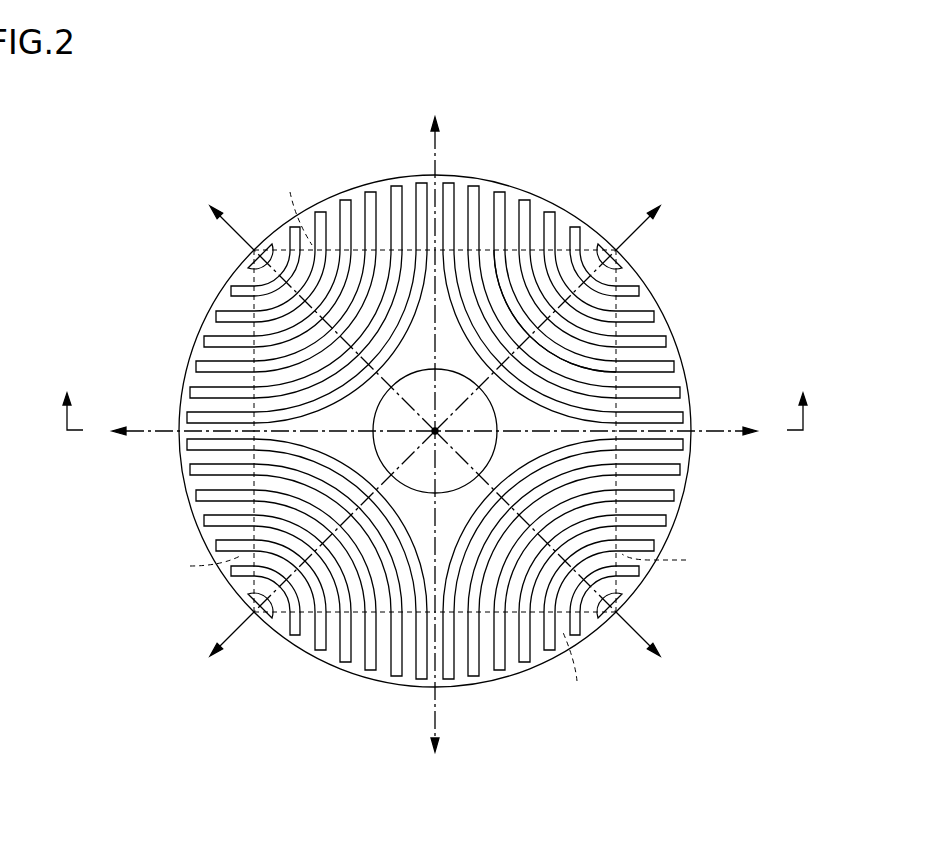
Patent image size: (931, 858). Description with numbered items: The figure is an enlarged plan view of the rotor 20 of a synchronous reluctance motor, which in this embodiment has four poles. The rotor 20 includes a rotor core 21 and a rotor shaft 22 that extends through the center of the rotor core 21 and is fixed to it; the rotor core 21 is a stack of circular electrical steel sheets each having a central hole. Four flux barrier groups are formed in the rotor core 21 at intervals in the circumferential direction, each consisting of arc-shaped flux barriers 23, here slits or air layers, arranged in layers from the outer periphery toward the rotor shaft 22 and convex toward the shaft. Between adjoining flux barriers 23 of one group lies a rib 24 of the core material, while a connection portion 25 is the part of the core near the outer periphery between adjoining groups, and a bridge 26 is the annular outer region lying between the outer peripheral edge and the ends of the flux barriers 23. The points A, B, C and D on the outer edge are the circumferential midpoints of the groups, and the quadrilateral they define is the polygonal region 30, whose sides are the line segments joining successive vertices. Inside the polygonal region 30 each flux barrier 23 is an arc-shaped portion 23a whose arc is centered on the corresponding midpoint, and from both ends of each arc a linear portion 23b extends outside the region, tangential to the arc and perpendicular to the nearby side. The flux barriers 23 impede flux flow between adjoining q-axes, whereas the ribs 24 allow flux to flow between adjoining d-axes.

The rotor 20 is at (451, 840).
The rotor core 21 is at (337, 453).
The rotor shaft 22 is at (390, 412).
The flux barrier 23 is at (472, 192).
The arc-shaped portion 23a is at (570, 366).
The linear portion 23b is at (502, 218).
The rib 24 is at (662, 330).
The connection portion 25 is at (430, 192).
The bridge 26 is at (345, 195).
The polygonal region 30 is at (626, 514).